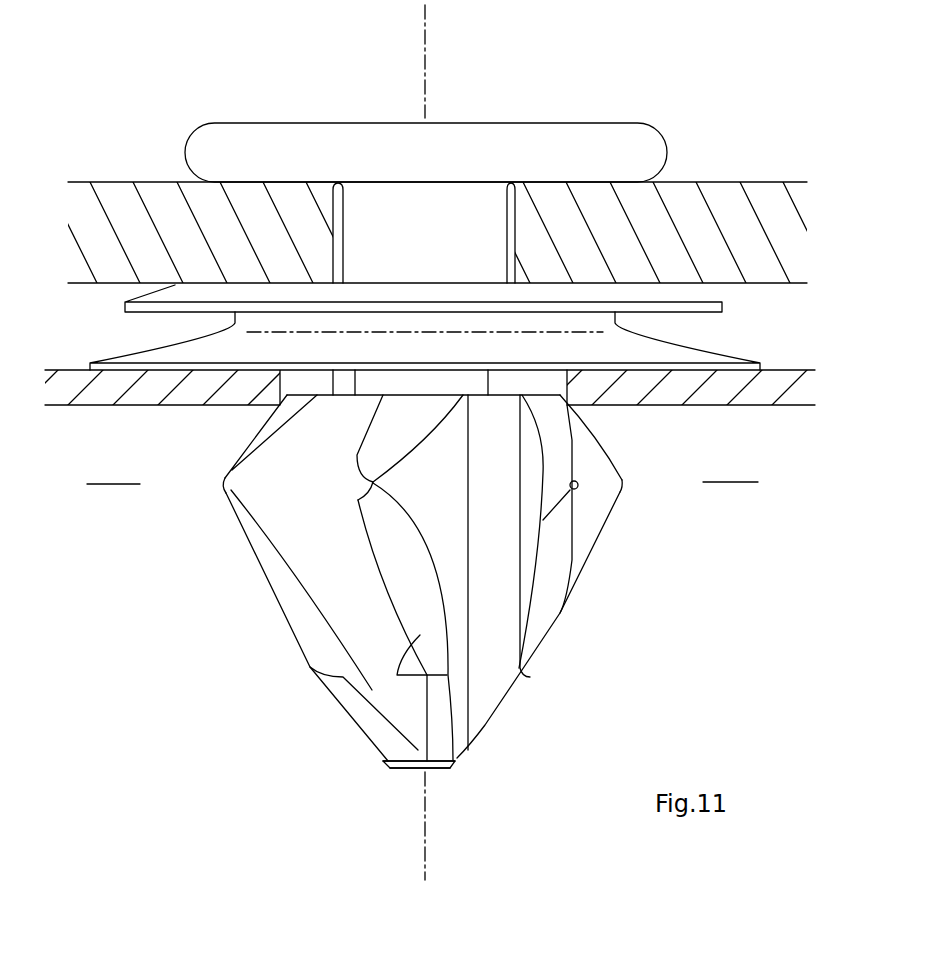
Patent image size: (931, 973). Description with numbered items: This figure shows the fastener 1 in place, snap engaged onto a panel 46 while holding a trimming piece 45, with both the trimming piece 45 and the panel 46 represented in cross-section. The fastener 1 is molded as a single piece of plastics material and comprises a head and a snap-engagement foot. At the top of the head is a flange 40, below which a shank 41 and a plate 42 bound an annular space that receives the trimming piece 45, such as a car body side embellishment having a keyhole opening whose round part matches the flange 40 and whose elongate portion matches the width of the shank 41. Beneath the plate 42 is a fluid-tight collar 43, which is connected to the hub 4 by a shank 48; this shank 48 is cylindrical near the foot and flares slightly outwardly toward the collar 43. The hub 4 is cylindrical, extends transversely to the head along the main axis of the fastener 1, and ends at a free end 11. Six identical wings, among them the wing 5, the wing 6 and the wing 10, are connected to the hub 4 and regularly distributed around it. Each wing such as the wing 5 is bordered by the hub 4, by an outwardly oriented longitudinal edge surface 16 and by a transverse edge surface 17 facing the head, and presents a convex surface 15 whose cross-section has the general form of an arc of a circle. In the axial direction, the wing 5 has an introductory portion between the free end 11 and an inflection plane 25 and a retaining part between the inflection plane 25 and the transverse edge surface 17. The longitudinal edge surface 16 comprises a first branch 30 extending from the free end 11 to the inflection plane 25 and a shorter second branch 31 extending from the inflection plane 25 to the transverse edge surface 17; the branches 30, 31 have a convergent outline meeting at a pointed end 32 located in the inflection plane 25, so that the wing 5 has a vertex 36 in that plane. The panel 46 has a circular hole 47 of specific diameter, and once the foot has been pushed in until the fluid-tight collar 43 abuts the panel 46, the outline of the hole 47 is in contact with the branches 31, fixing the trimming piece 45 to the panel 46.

The fastener 1 is at (438, 564).
The hub 4 is at (442, 771).
The wing 5 is at (383, 627).
The wing 6 is at (279, 629).
The wing 10 is at (400, 584).
The free end 11 is at (403, 772).
The convex surface 15 is at (424, 490).
The longitudinal edge surface 16 is at (420, 752).
The transverse edge surface 17 is at (335, 390).
The inflection plane 25 is at (100, 484).
The first branch 30 is at (277, 569).
The second branch 31 is at (413, 412).
The pointed end 32 is at (373, 478).
The vertex 36 is at (220, 484).
The flange 40 is at (587, 134).
The shank 41 is at (398, 197).
The plate 42 is at (677, 296).
The fluid-tight collar 43 is at (690, 355).
The trimming piece 45 is at (439, 204).
The panel 46 is at (753, 397).
The hole 47 is at (305, 382).
The shank 48 is at (460, 382).